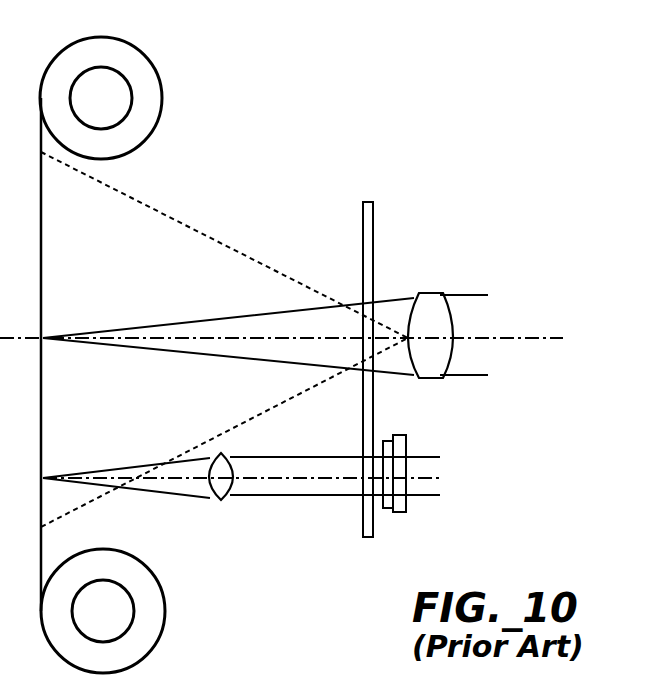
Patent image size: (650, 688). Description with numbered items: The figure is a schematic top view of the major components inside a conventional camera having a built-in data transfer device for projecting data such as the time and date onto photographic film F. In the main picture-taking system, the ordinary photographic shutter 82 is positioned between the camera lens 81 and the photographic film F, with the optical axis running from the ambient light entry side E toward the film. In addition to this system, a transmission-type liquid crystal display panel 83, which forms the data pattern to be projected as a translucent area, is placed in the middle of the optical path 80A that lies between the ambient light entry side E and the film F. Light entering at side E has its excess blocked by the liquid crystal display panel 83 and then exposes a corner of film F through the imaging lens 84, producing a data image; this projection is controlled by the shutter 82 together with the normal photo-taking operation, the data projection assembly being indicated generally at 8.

The photographic film F is at (41, 228).
The ambient light entry side E is at (292, 338).
The photographic shutter 82 is at (373, 203).
The camera lens 81 is at (437, 292).
The optical path 80A is at (505, 318).
The imaging lens 84 is at (222, 501).
The transmission-type liquid crystal display panel 83 is at (400, 512).
The detector assembly 8 is at (450, 488).